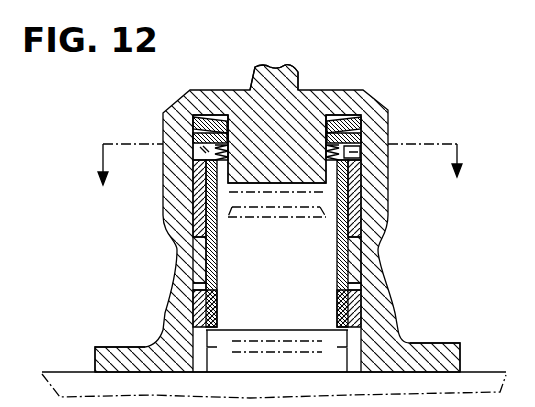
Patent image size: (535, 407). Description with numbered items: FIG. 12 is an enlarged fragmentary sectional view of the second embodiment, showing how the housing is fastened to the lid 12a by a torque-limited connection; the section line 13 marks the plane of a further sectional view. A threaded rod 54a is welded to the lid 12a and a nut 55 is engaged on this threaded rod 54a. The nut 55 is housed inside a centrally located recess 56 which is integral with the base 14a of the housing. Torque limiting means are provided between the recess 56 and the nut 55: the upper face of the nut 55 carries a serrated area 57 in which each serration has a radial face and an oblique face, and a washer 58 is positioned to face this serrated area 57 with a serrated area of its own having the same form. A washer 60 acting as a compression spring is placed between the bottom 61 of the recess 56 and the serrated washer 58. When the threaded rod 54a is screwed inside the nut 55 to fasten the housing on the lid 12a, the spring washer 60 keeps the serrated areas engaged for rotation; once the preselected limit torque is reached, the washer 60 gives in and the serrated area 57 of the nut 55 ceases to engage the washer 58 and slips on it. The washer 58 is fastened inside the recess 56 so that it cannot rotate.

The lid 12a is at (72, 392).
The section line 13- 13 is at (278, 180).
The base 14a is at (160, 343).
The threaded rod 54a is at (315, 297).
The nut 55 is at (198, 213).
The recess 56 is at (374, 214).
The serrated area 57 is at (345, 155).
The washer 58 is at (193, 135).
The washer acting as a compression spring 60 is at (341, 120).
The bottom of the recess 61 is at (238, 107).